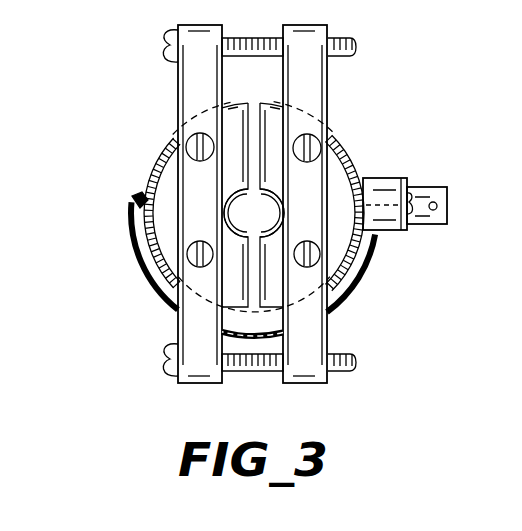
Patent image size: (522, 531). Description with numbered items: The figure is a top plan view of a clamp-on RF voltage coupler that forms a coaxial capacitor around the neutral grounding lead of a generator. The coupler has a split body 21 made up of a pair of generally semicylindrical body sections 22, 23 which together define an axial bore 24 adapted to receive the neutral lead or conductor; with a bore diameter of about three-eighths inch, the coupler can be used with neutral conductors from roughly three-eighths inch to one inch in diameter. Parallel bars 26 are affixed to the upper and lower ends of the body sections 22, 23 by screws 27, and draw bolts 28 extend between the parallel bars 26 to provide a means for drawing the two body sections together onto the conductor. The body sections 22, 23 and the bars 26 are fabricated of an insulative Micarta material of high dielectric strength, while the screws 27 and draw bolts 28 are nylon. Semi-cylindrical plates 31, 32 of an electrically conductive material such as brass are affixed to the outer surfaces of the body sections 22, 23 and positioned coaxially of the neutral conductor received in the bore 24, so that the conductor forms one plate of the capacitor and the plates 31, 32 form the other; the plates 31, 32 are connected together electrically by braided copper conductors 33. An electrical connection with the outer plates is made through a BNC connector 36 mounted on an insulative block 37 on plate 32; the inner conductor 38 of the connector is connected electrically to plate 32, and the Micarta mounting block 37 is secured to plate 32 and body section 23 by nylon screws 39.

The split body 21 is at (150, 168).
The body section 22 is at (127, 240).
The body section 23 is at (350, 253).
The axial bore 24 is at (233, 208).
The parallel bars 26 is at (200, 72).
The screws 27 is at (176, 137).
The draw bolts 28 is at (341, 56).
The semi-cylindrical plate 31 is at (150, 172).
The semi-cylindrical plate 32 is at (335, 140).
The braided copper conductors 33 is at (157, 303).
The BNC connector 36 is at (418, 188).
The insulative block 37 is at (375, 240).
The inner conductor 38 is at (392, 200).
The screws 39 is at (414, 226).